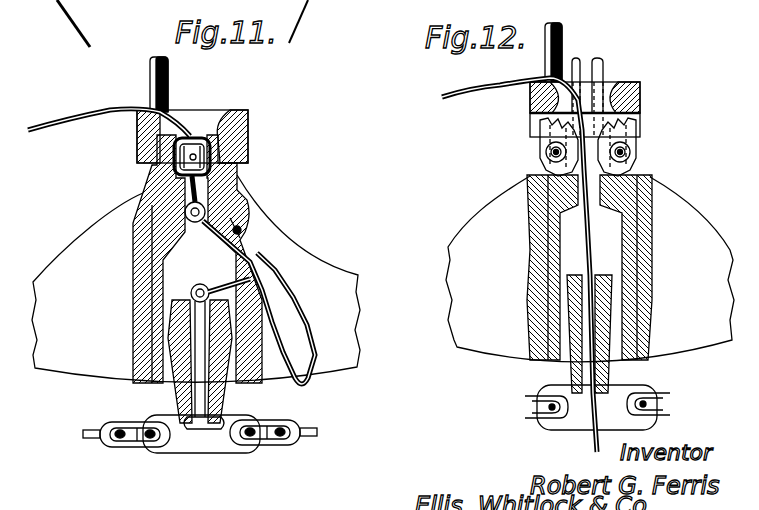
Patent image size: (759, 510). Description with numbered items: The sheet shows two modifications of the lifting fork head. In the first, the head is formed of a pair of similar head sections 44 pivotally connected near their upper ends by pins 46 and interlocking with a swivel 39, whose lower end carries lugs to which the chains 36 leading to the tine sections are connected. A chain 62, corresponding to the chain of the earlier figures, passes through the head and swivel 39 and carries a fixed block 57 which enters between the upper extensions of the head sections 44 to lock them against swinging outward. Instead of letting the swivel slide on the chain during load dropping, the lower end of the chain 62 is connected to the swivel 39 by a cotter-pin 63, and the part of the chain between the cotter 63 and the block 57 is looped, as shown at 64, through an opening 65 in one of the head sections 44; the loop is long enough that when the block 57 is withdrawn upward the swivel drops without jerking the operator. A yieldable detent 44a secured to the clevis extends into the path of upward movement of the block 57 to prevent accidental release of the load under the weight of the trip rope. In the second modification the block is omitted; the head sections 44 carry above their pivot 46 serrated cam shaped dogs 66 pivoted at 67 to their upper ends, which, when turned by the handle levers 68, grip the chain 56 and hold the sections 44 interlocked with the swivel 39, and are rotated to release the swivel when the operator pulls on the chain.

In FIG. 11, the chains 36 is at (123, 448).
In FIG. 12, the chains 36 is at (537, 425).
In FIG. 11, the swivel 39 is at (179, 361).
In FIG. 12, the swivel 39 is at (617, 375).
In FIG. 11, the head sections 44 is at (89, 253).
In FIG. 12, the head sections 44 is at (490, 240).
In FIG. 11, the yieldable detents 44a is at (192, 135).
In FIG. 11, the pins 46 is at (187, 210).
In FIG. 12, the pins 46 is at (640, 190).
In FIG. 12, the chain 56 is at (519, 265).
In FIG. 11, the block 57 is at (248, 148).
In FIG. 11, the chain 62 is at (82, 112).
In FIG. 11, the cotter-pin 63 is at (207, 398).
In FIG. 11, the loop 64 is at (292, 295).
In FIG. 11, the opening 65 is at (243, 228).
In FIG. 12, the serrated cam shaped dogs 66 is at (545, 140).
In FIG. 12, the pivot 67 is at (552, 153).
In FIG. 12, the handle levers 68 is at (594, 58).